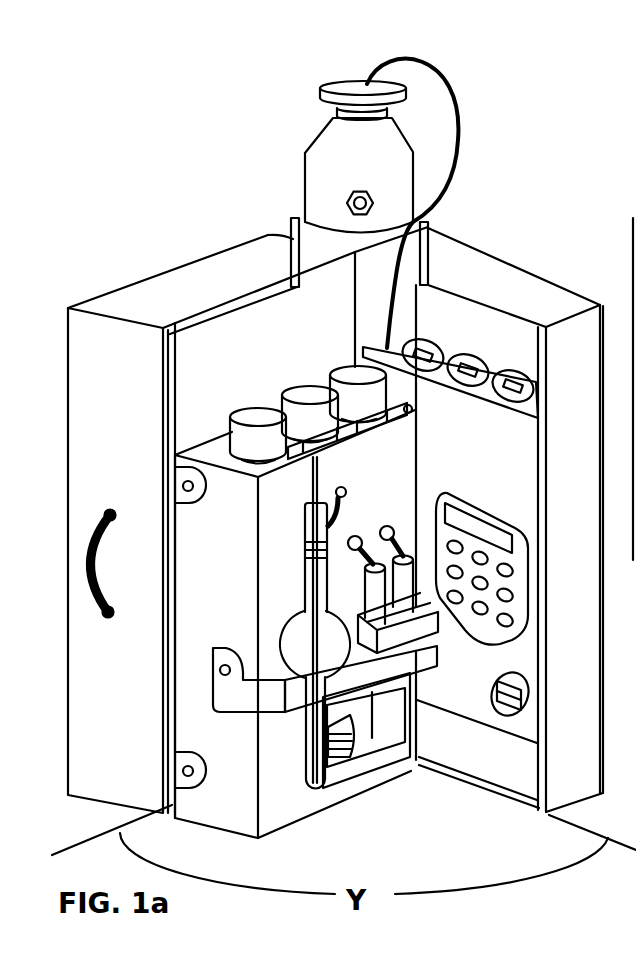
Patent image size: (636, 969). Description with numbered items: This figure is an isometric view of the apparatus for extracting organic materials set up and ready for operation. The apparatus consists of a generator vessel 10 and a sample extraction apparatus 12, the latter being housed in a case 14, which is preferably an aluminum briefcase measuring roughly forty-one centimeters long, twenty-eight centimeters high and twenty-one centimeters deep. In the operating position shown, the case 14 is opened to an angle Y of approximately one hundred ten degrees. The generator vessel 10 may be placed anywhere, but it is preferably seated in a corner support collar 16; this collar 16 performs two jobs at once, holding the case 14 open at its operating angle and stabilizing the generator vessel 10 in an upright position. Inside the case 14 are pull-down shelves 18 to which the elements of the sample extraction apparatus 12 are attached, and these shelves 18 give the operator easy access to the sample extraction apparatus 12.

The generator vessel 10 is at (274, 127).
The sample extraction apparatus 12 is at (397, 821).
The case 14 is at (545, 280).
The corner support collar 16 is at (297, 220).
The pull-down shelves 18 is at (226, 712).